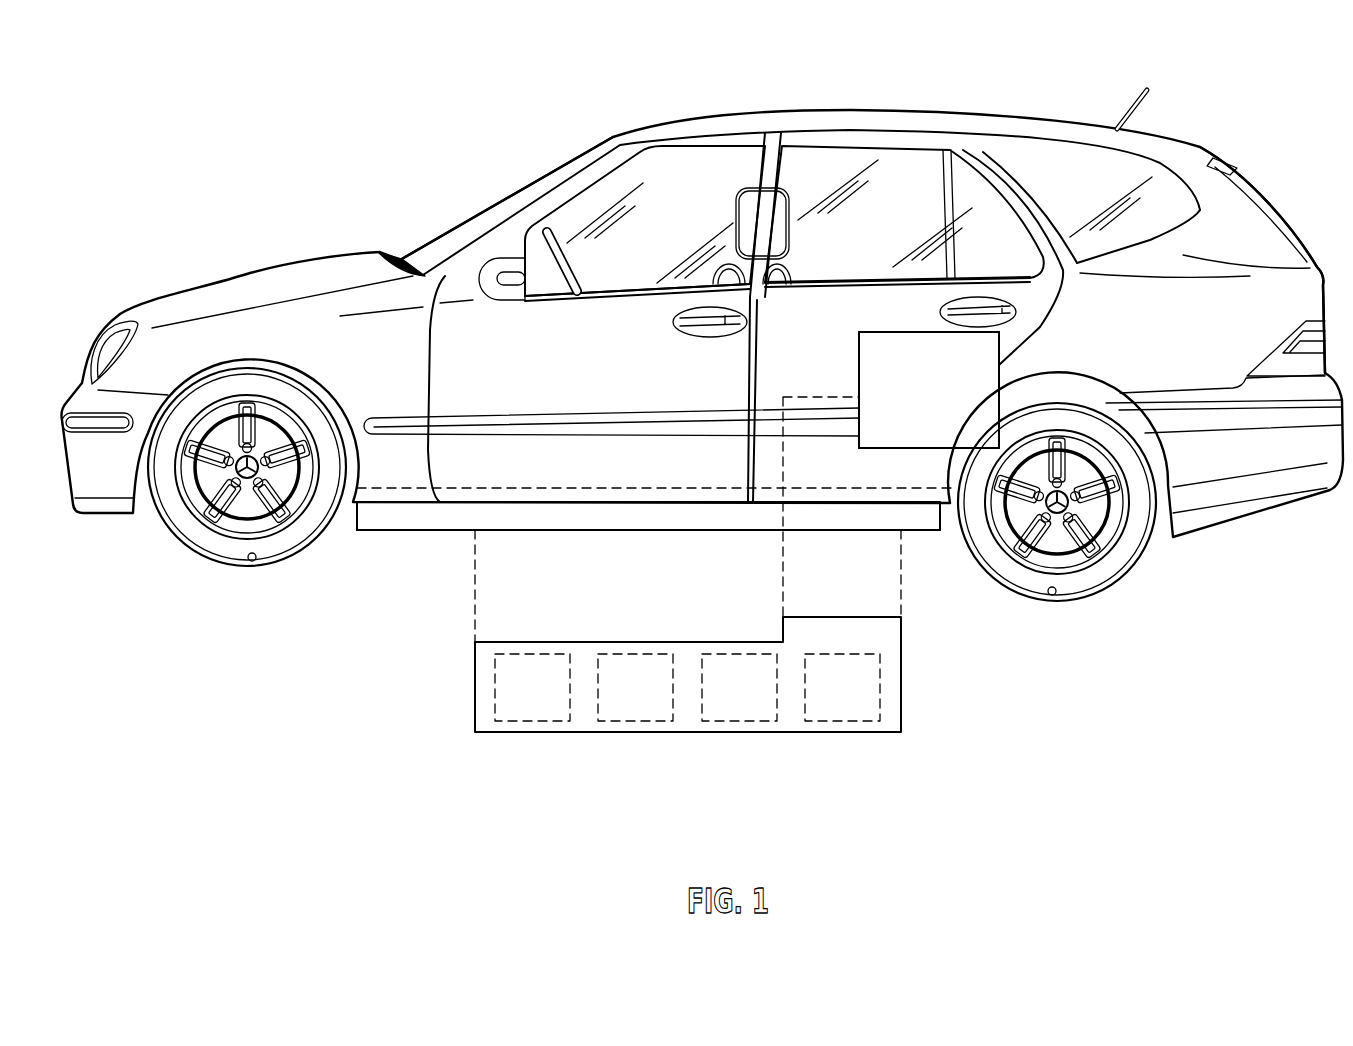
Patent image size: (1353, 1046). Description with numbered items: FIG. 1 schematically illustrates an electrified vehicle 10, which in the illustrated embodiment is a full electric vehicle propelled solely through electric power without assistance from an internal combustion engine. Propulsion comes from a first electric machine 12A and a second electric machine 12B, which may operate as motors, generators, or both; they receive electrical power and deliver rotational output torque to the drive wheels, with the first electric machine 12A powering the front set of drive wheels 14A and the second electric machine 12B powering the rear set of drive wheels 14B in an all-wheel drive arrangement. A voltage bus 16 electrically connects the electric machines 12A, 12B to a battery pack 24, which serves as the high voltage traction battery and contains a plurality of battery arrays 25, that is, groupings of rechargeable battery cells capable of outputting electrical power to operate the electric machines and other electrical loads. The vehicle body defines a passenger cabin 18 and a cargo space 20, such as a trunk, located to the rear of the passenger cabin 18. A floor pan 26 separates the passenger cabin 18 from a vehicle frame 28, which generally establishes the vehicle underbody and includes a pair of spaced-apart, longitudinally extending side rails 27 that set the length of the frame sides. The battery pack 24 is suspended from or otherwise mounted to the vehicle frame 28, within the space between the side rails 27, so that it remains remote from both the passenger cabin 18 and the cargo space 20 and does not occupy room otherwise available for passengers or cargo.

The electrified vehicle 10 is at (1230, 136).
The first electric machine 12A is at (892, 404).
The second electric machine 12B is at (929, 390).
The front set of drive wheels 14A is at (258, 556).
The rear set of drive wheels 14B is at (1046, 594).
The voltage bus 16 is at (827, 394).
The passenger cabin 18 is at (668, 178).
The cargo space 20 is at (1253, 198).
The battery pack 24 is at (690, 738).
The battery arrays 25 is at (523, 703).
The floor pan 26 is at (530, 487).
The side rails 27 is at (402, 520).
The vehicle frame 28 is at (606, 527).